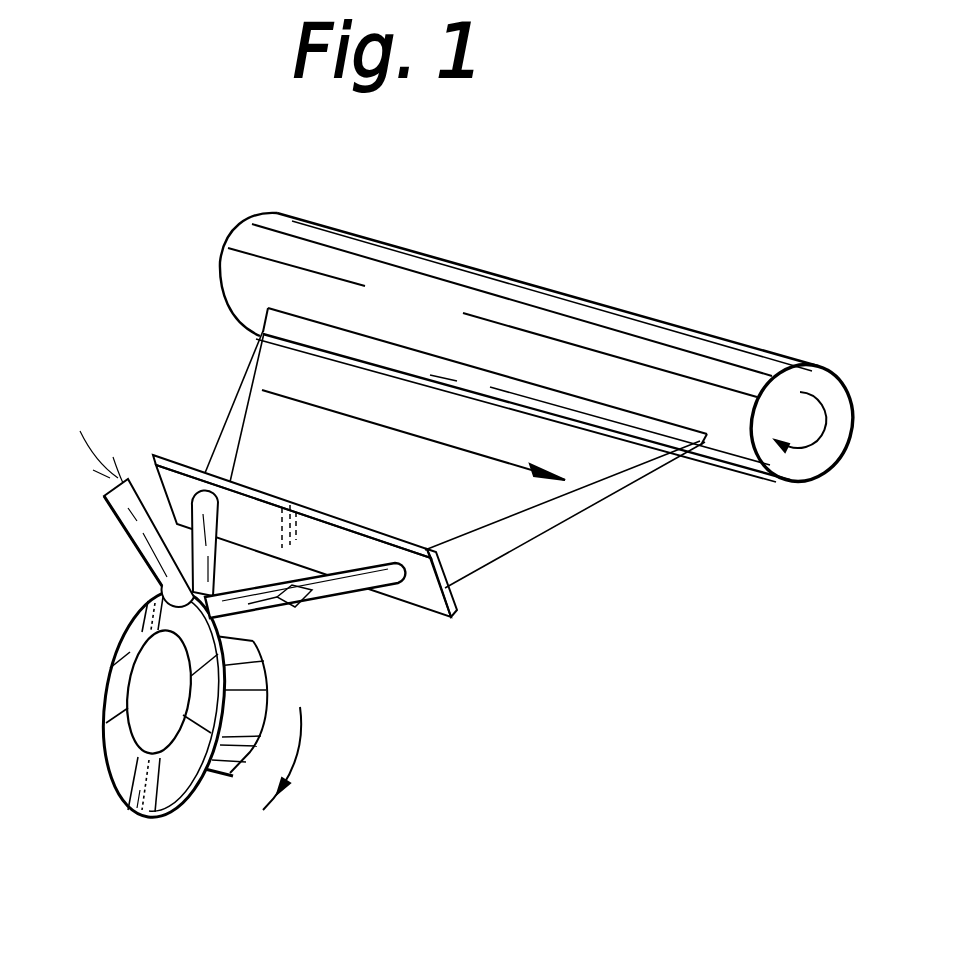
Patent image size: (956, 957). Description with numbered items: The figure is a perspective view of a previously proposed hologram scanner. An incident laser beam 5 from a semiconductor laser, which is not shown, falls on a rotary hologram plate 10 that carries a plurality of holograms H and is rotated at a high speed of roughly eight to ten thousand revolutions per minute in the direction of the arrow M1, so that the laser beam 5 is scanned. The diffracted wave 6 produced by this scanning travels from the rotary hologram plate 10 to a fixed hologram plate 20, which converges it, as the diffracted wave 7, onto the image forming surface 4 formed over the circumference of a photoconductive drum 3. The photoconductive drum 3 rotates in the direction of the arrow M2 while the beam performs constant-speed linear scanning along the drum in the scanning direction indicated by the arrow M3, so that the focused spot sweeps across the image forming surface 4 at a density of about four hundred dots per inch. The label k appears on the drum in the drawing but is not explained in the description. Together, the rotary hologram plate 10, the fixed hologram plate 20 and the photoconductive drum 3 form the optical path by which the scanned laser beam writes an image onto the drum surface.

The photoconductive drum 3 is at (833, 387).
The image forming surface 4 is at (603, 406).
The incident laser beam 5 is at (130, 524).
The diffracted wave 6 is at (352, 598).
The diffracted wave 7 is at (593, 488).
The rotary hologram plate 10 is at (104, 752).
The fixed hologram plate 20 is at (457, 598).
The holograms H is at (134, 803).
The cylinder axis region k is at (478, 352).
The direction of rotation of the rotary hologram plate M1 is at (305, 758).
The direction of rotation of the photoconductive drum M2 is at (794, 422).
The scanning direction of the laser beam M3 is at (413, 435).